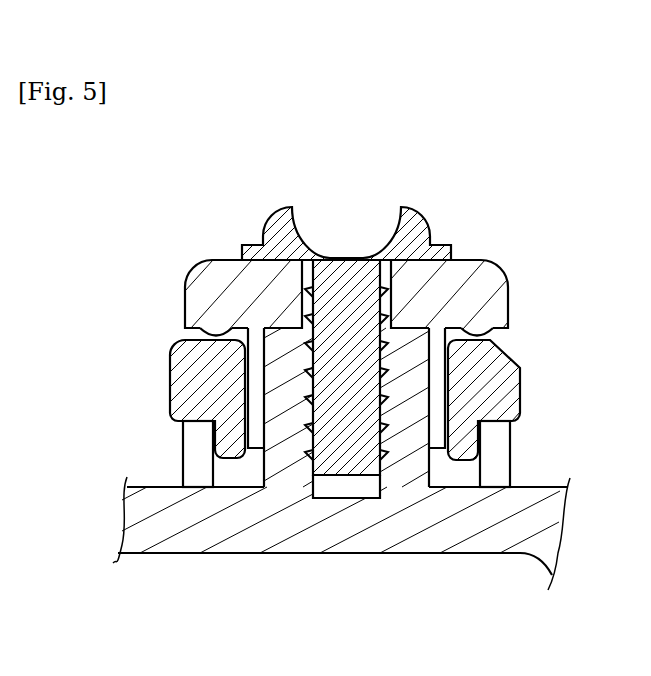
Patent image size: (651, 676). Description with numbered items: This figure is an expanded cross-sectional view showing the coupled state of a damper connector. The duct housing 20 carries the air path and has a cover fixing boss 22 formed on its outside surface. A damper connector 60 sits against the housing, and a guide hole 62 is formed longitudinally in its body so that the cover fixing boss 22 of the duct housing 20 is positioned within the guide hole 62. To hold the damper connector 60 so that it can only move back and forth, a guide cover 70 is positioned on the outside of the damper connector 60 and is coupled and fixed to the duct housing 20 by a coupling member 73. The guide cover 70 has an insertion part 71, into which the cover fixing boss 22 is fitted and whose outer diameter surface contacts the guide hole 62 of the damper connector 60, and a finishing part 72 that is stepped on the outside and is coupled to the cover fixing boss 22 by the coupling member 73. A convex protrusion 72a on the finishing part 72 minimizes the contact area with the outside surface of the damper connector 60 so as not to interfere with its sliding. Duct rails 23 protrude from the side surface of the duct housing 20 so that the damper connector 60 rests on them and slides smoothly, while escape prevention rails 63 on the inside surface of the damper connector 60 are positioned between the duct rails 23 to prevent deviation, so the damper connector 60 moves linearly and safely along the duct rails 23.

The duct housing 20 is at (187, 522).
The cover fixing boss 22 is at (405, 345).
The duct rails 23 is at (197, 468).
The damper connector 60 is at (510, 387).
The guide hole 62 is at (442, 386).
The escape prevention rails 63 is at (482, 443).
The guide cover 70 is at (275, 240).
The insertion part 71 is at (245, 397).
The finishing part 72 is at (275, 272).
The convex protrusion 72a is at (205, 336).
The coupling member 73 is at (283, 227).